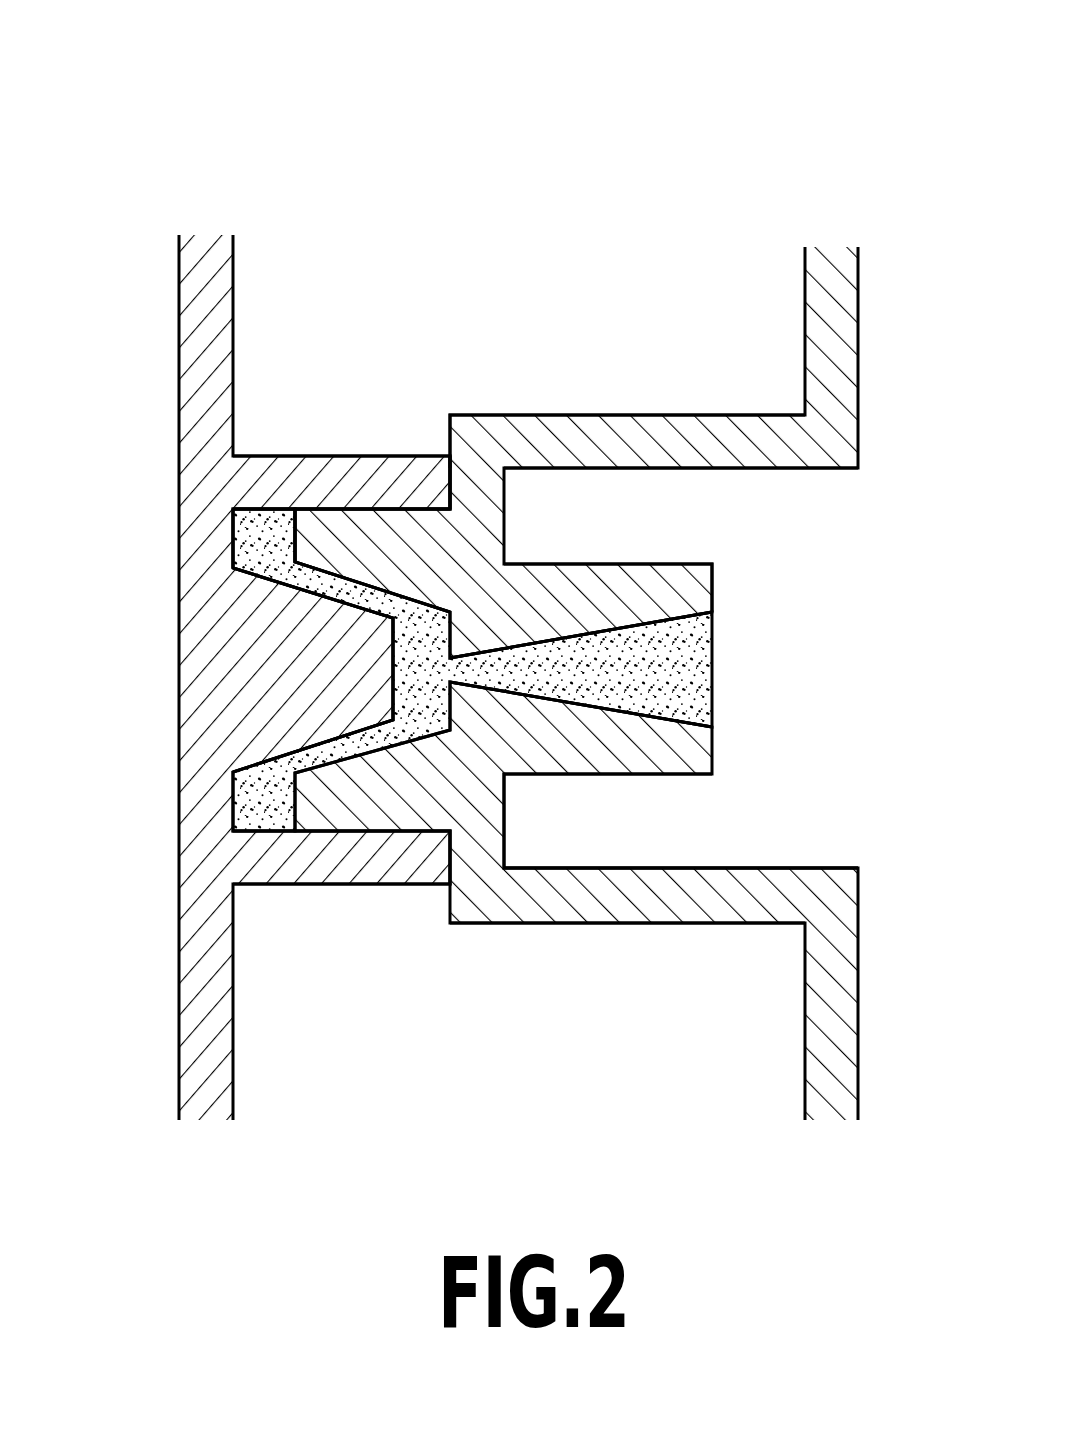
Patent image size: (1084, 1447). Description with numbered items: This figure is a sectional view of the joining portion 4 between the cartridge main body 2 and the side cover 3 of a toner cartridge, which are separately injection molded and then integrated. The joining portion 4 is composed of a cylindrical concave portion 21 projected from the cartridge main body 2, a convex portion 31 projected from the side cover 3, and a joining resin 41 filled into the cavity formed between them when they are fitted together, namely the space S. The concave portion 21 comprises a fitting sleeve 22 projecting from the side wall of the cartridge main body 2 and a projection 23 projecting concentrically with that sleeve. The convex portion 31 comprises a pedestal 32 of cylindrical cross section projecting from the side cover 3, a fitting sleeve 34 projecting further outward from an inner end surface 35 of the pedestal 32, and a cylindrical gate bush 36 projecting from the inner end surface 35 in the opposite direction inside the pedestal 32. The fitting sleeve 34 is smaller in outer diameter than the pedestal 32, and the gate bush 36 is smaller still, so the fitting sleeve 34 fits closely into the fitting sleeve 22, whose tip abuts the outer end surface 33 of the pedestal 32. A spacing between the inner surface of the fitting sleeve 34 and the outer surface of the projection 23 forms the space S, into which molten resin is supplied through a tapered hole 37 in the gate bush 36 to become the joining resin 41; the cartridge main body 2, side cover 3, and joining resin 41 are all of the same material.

The cartridge main body 2 is at (196, 310).
The side cover 3 is at (845, 340).
The joining portion 4 is at (479, 148).
The concave portion 21 is at (310, 382).
The fitting sleeve 22 is at (305, 865).
The projection 23 is at (347, 690).
The convex portion 31 is at (634, 358).
The pedestal 32 is at (660, 900).
The outer end surface 33 is at (444, 478).
The fitting sleeve 34 is at (358, 540).
The inner end surface 35 is at (514, 830).
The gate bush 36 is at (643, 585).
The tapered hole 37 is at (628, 632).
The joining resin 41 is at (685, 695).
The space S is at (236, 537).